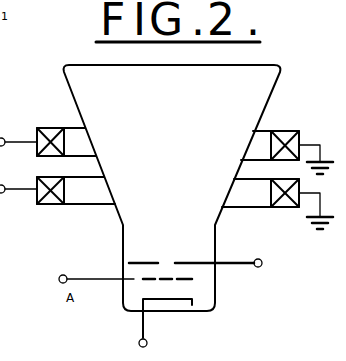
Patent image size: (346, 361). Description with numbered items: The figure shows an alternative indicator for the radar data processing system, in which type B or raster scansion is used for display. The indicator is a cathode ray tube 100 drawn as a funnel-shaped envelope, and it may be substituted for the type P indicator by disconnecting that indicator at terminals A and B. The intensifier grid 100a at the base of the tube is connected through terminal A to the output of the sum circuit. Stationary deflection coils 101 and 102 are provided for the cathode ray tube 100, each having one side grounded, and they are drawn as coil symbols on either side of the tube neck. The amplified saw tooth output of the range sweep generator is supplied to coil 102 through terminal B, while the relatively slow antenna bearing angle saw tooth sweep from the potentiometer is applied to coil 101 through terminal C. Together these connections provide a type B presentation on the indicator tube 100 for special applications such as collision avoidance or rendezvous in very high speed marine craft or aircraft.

The type B indicator cathode ray tube 100 is at (279, 70).
The stationary deflection coil 101 is at (51, 128).
The stationary deflection coil 102 is at (50, 205).
The intensifier grid 100a is at (197, 283).